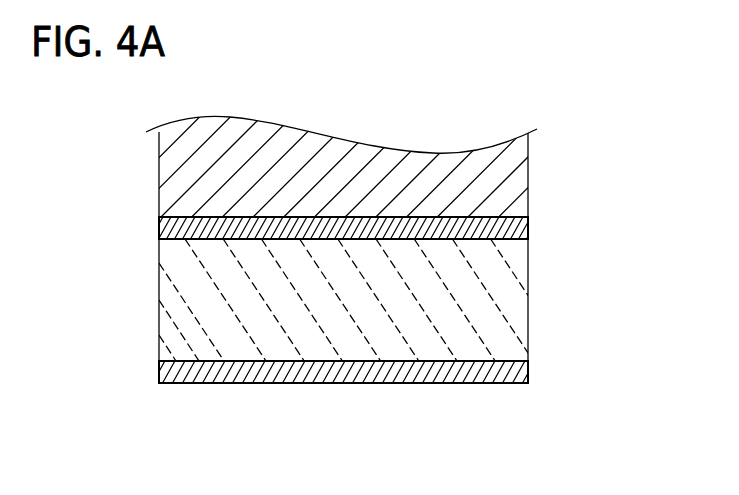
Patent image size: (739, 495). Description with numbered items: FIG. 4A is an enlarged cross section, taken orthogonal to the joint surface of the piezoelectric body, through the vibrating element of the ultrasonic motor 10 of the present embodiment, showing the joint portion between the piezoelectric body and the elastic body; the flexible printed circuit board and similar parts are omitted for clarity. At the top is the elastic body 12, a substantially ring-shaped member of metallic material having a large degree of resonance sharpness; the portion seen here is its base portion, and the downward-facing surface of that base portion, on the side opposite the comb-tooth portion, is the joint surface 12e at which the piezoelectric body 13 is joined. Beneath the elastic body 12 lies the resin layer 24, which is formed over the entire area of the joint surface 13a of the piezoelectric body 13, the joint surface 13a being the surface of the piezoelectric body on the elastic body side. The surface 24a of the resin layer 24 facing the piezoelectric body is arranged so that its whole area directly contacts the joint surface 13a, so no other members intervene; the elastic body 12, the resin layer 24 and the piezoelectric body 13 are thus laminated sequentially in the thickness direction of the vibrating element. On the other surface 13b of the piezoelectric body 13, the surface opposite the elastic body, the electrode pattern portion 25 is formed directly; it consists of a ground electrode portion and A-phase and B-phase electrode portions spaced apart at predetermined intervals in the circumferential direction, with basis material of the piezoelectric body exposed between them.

The ultrasonic motor 10 is at (553, 66).
The elastic body 12 is at (520, 171).
The joint surface 12e is at (160, 228).
The resin layer 24 is at (520, 226).
The surface of the resin layer 24a is at (192, 241).
The piezoelectric body 13 is at (521, 318).
The joint surface 13a is at (500, 241).
The other surface 13b is at (194, 362).
The electrode pattern portion 25 is at (520, 369).